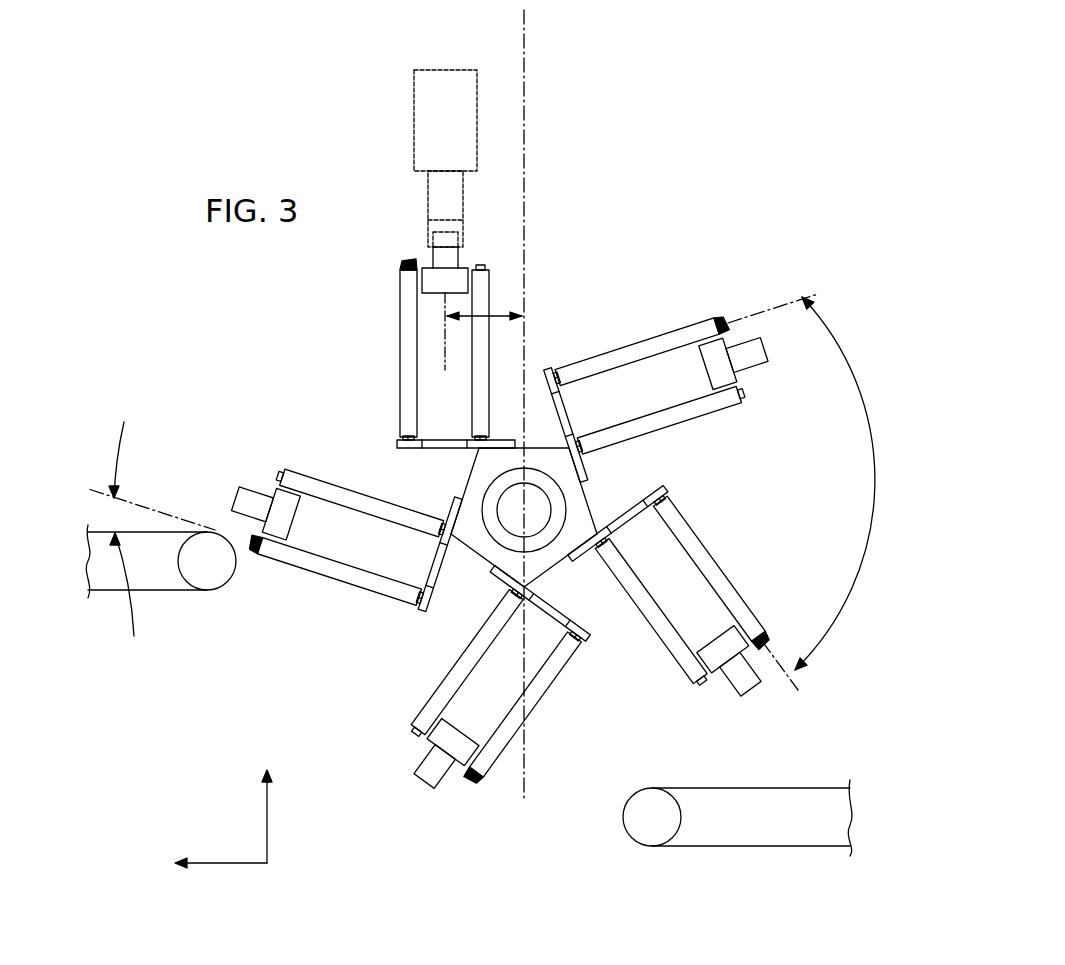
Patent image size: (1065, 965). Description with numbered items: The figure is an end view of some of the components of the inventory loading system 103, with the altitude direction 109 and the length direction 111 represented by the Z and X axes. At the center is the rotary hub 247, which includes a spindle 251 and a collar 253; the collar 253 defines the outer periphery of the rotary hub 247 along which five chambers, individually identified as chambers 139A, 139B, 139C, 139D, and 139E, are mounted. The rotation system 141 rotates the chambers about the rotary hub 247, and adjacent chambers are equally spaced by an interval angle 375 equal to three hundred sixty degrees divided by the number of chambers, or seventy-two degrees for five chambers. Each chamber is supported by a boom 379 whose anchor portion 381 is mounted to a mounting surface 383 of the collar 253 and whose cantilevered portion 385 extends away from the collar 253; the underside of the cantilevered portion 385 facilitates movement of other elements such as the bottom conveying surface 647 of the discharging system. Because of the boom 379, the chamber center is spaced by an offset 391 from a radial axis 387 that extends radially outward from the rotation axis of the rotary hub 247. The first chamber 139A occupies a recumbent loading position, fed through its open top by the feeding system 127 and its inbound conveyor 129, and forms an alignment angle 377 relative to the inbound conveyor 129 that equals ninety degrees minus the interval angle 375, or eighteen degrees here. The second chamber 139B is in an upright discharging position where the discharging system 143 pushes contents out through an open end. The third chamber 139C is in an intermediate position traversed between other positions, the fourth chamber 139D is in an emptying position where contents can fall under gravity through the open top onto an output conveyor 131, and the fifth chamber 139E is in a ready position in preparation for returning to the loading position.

The inventory loading system 103 is at (704, 142).
The altitude direction 109 is at (267, 822).
The length direction 111 is at (235, 863).
The feeding system 127 is at (165, 632).
The inbound conveyor 129 is at (103, 592).
The output conveyor 131 is at (695, 848).
The first chamber 139A is at (322, 548).
The second chamber 139B is at (435, 358).
The third chamber 139C is at (661, 394).
The fourth chamber 139D is at (682, 578).
The fifth chamber 139E is at (477, 695).
The rotation system 141 is at (580, 118).
The discharging system 143 is at (380, 125).
The rotary hub 247 is at (549, 275).
The spindle 251 is at (510, 500).
The collar 253 is at (608, 490).
The interval angle 375 is at (872, 452).
The alignment angle 377 is at (122, 453).
The boom 379 is at (400, 441).
The anchor portion 381 is at (516, 447).
The mounting surface 383 is at (556, 420).
The cantilevered portion 385 is at (398, 464).
The radial axis 387 is at (524, 43).
The offset 391 is at (528, 318).
The bottom conveying surface 647 is at (440, 438).